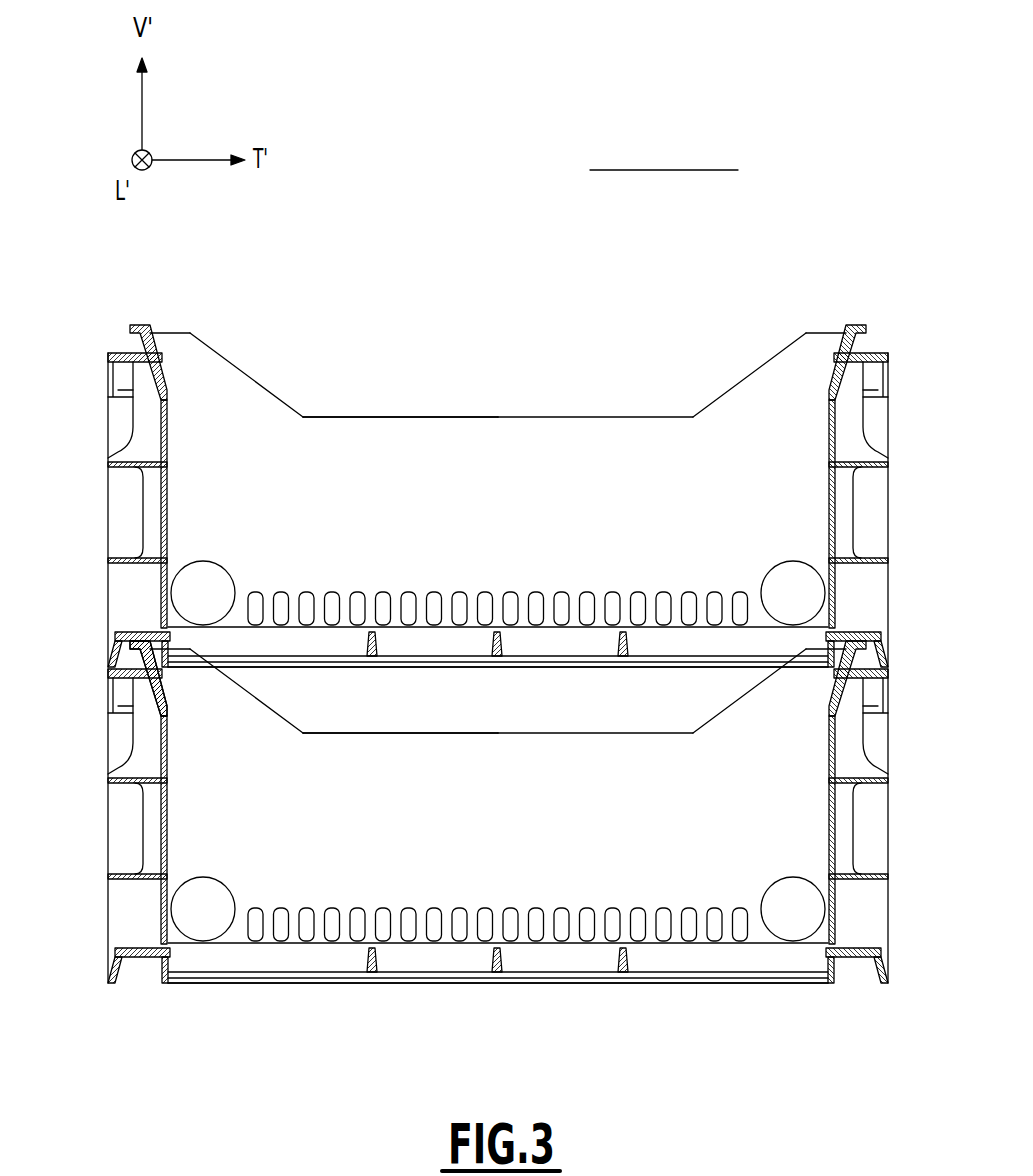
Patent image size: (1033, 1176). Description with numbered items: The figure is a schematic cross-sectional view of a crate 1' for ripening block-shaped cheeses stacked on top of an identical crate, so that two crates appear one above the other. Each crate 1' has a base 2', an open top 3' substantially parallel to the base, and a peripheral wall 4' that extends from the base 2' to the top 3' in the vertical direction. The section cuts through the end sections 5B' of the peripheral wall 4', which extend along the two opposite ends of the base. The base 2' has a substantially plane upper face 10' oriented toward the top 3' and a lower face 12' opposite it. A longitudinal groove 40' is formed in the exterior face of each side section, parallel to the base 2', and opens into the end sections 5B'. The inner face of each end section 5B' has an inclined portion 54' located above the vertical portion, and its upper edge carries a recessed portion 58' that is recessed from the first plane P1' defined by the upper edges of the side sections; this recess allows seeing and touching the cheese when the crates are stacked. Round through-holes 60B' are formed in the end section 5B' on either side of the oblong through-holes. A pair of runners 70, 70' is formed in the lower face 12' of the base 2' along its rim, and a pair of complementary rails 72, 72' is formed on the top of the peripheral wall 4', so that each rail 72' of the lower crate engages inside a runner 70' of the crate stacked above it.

The crate 1' is at (459, 617).
The base 2' is at (498, 832).
The open top 3' is at (498, 457).
The peripheral wall 4' is at (498, 533).
The end section 5B' is at (498, 698).
The upper face 10' is at (498, 813).
The lower face 12' is at (498, 831).
The longitudinal groove 40' is at (496, 616).
The inclined portion 54' is at (480, 557).
The recessed portion 58' is at (498, 542).
The round through-hole 60B' is at (436, 773).
The bottom flange 70 is at (105, 807).
The runner 70' is at (885, 807).
The upper lip 72 is at (103, 670).
The rail 72' is at (535, 485).
The first plane P1' is at (664, 140).